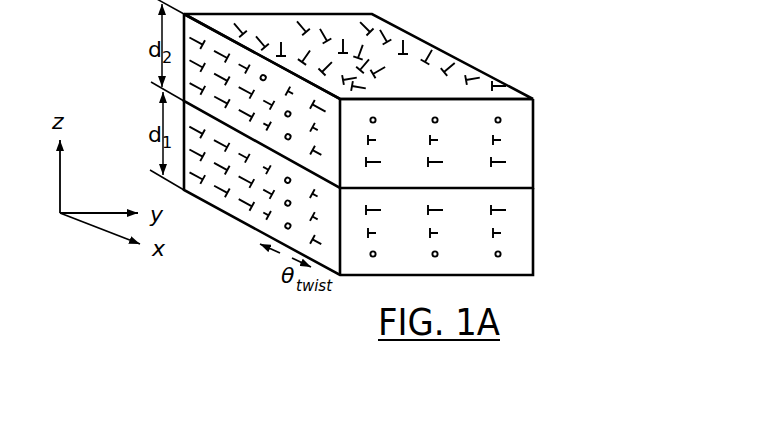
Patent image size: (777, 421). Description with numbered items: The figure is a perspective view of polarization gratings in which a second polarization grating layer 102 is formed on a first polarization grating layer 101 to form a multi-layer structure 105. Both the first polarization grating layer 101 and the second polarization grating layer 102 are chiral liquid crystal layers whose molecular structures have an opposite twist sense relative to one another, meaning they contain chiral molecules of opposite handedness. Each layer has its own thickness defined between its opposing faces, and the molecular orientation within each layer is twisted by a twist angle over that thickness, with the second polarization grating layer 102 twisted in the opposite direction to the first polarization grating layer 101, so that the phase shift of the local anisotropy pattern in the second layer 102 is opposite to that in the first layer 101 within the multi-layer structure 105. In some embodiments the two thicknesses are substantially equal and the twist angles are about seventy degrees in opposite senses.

The first polarization grating layer 101 is at (562, 223).
The second polarization grating layer 102 is at (562, 152).
The multi-layer structure 105 is at (612, 5).